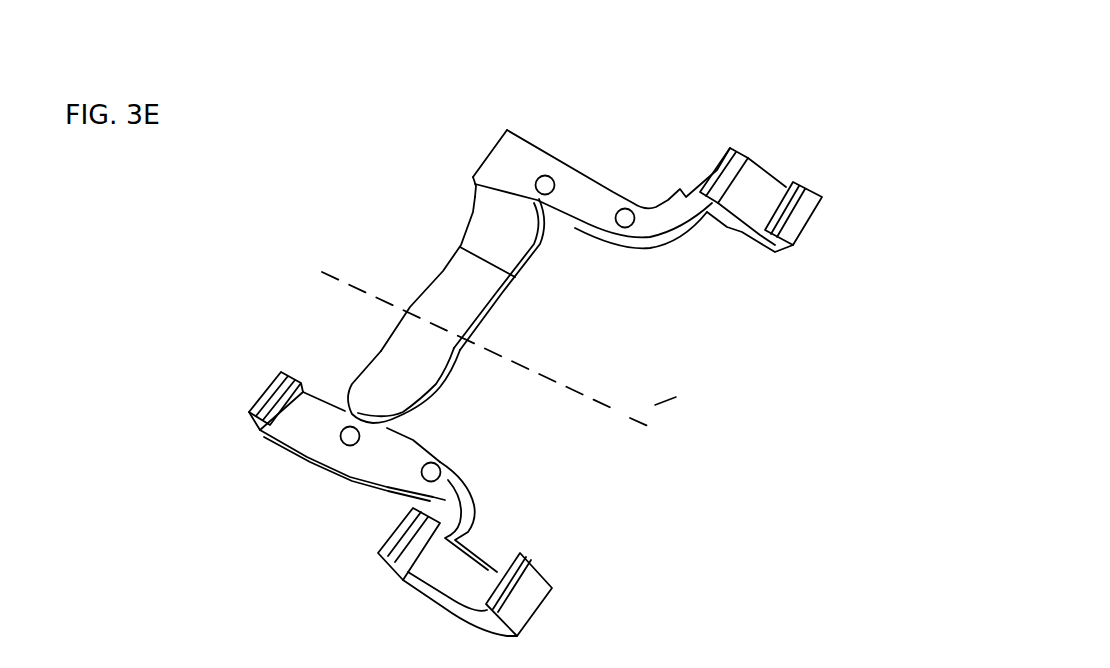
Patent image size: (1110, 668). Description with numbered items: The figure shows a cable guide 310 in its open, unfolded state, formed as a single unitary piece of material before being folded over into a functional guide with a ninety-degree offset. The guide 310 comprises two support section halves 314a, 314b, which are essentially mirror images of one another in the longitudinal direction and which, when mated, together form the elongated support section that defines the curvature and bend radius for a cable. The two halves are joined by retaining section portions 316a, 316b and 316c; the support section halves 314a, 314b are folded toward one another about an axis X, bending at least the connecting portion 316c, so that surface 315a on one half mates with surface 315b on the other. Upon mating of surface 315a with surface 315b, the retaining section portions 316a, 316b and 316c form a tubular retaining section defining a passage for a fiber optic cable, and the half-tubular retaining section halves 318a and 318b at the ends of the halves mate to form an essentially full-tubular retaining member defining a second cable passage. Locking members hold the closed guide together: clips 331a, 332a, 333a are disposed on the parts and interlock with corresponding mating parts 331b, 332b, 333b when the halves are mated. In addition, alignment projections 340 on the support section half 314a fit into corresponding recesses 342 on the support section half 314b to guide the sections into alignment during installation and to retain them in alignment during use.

The cable guide 310 is at (333, 242).
The support section half 314a is at (352, 474).
The support section half 314b is at (612, 185).
The surface 315a is at (362, 452).
The surface 315b is at (578, 190).
The retaining section portion 316a is at (379, 412).
The retaining section portion 316b is at (513, 238).
The connecting portion 316c is at (443, 300).
The retaining section half 318a is at (460, 607).
The retaining section half 318b is at (744, 221).
The clip 331a is at (270, 394).
The mating part 331b is at (491, 144).
The clip 332a is at (423, 528).
The mating part 332b is at (731, 147).
The clip 333a is at (517, 572).
The mating part 333b is at (828, 202).
The alignment projections 340 is at (354, 437).
The recesses 342 is at (547, 187).